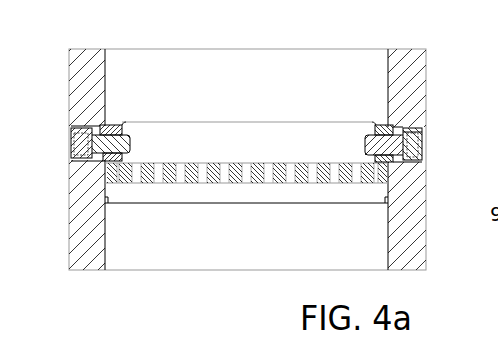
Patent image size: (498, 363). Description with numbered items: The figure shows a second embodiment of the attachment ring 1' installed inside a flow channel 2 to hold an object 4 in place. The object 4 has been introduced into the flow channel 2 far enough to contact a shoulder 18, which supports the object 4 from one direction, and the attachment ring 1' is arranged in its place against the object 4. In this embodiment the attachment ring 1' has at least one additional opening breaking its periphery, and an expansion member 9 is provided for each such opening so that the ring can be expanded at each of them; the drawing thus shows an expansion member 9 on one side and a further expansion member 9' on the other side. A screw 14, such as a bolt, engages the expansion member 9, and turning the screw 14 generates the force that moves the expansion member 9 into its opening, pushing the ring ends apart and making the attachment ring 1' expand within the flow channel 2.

The flow channel 2 is at (198, 271).
The attachment ring 1' is at (246, 117).
The object 4 is at (257, 184).
The expansion member 9' is at (123, 143).
The expansion member 9 is at (363, 143).
The screw 14 is at (418, 132).
The shoulder 18 is at (110, 198).